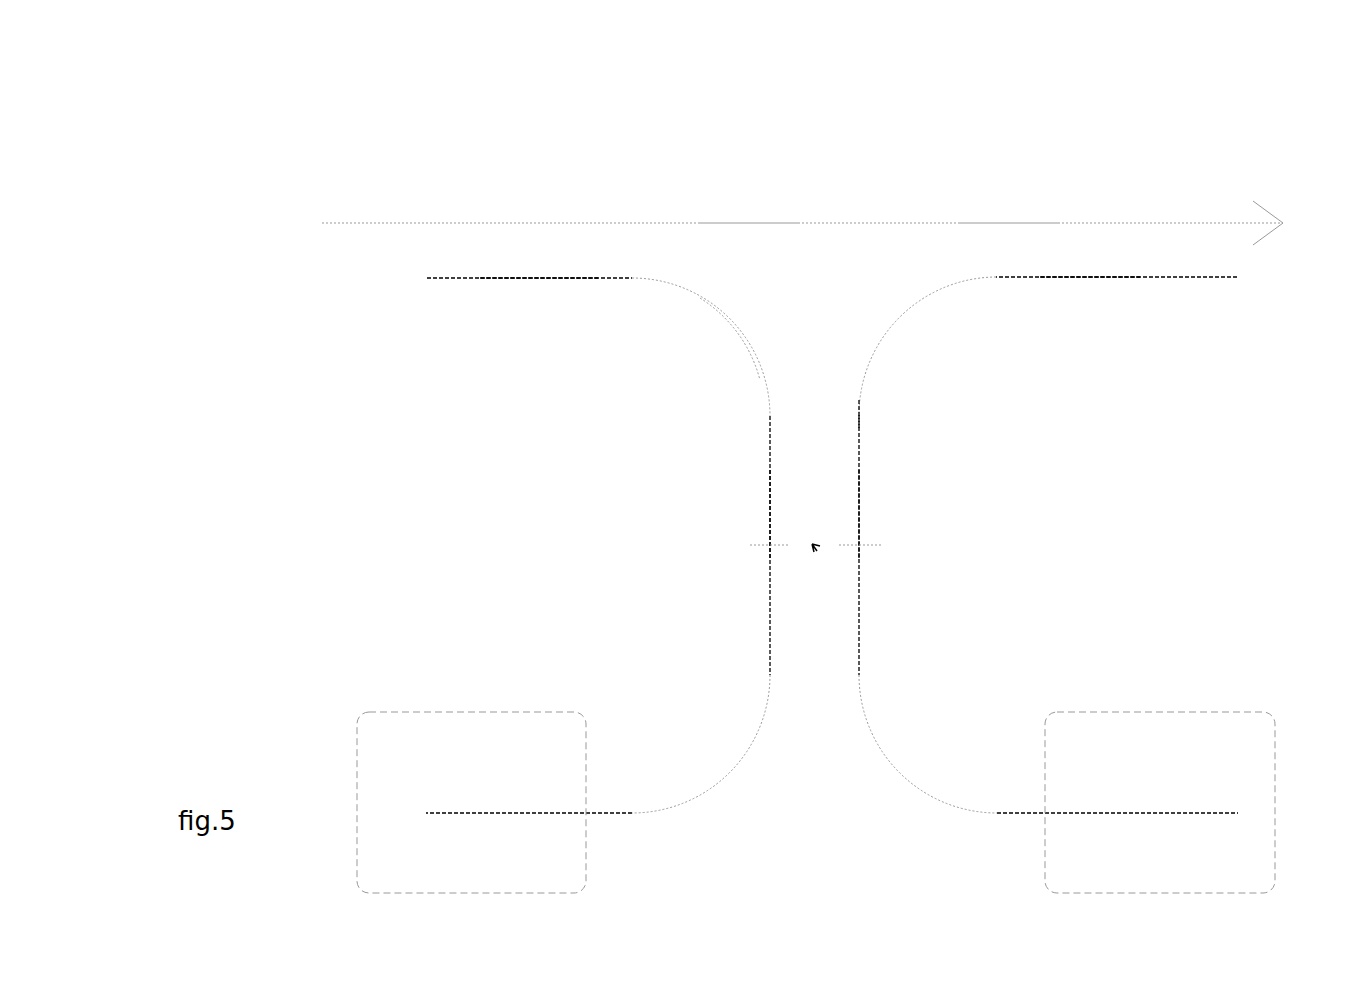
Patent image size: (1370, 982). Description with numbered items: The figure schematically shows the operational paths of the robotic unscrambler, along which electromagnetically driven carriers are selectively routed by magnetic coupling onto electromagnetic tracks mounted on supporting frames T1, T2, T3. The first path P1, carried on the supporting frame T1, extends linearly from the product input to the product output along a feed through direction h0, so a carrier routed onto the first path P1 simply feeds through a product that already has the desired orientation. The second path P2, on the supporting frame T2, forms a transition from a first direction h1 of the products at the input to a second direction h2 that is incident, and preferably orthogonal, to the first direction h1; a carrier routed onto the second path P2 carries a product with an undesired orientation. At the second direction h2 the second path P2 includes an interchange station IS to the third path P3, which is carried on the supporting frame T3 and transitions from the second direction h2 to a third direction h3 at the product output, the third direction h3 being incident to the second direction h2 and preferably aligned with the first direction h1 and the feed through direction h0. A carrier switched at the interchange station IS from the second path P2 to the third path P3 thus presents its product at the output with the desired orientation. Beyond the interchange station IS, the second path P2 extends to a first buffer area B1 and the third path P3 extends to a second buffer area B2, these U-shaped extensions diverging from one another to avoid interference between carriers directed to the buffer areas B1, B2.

The supporting frame T1 is at (857, 91).
The supporting frame T2 is at (538, 572).
The supporting frame T3 is at (1177, 546).
The feed through direction h0 is at (748, 222).
The first direction h1 is at (536, 278).
The second direction h2 is at (860, 507).
The third direction h3 is at (1082, 277).
The first path P1 is at (1005, 222).
The second path P2 is at (740, 336).
The third path P3 is at (877, 357).
The interchange station IS is at (815, 548).
The first buffer area B1 is at (395, 708).
The second buffer area B2 is at (1238, 708).